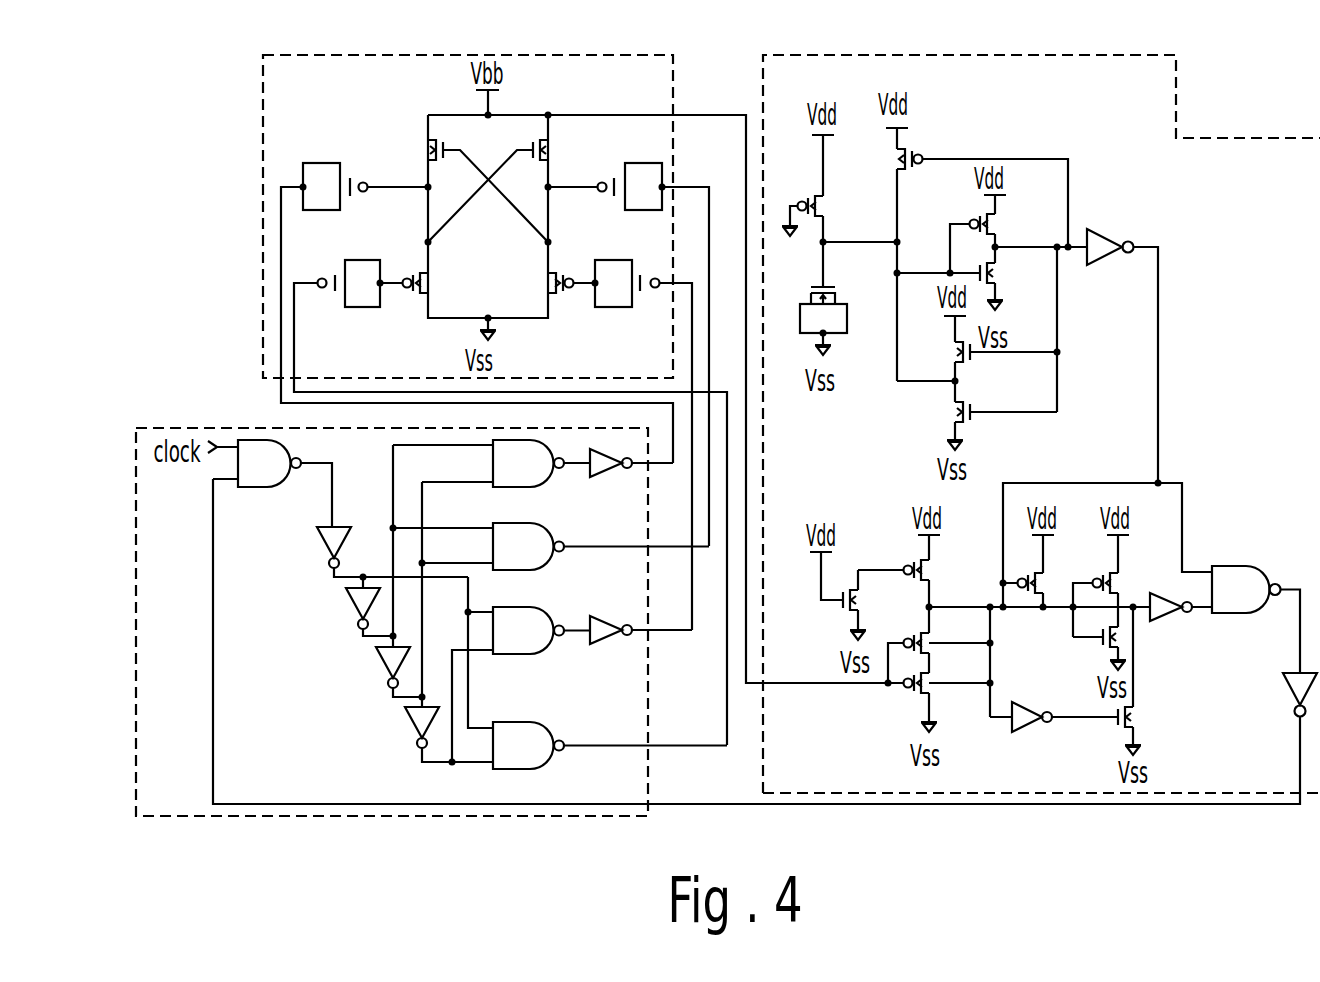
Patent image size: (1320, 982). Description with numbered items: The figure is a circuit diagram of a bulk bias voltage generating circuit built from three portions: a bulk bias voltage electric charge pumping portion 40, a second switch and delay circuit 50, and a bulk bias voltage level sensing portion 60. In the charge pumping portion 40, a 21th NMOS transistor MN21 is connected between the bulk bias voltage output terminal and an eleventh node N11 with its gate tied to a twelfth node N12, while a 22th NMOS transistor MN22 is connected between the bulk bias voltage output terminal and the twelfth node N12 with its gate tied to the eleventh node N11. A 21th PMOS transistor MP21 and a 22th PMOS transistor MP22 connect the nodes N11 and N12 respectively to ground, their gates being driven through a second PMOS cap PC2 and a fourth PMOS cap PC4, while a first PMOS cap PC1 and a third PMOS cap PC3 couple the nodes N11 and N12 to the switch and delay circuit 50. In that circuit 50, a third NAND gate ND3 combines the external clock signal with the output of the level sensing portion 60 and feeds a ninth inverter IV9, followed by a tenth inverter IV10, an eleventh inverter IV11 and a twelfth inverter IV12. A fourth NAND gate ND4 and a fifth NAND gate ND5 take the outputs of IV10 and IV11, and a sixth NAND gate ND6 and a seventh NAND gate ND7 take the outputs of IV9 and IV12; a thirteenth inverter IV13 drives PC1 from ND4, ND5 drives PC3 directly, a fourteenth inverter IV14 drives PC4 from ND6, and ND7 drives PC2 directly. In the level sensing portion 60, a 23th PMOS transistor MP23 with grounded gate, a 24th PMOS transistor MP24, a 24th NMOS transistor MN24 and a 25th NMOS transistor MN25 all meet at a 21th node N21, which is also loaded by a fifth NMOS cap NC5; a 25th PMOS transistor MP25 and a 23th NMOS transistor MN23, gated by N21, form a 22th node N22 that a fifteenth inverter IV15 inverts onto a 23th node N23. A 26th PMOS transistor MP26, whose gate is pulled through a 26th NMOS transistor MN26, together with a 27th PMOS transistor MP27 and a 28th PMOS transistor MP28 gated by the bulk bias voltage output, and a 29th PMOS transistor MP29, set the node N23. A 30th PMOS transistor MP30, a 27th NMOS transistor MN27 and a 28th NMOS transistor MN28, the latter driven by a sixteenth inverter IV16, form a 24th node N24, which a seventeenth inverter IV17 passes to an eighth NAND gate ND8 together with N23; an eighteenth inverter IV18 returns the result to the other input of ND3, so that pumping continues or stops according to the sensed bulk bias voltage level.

The bulk bias voltage (Vbb) electric charge pumping portion 40 is at (263, 215).
The second switch and delay circuit 50 is at (182, 428).
The bulk bias voltage (Vbb) level sensing portion 60 is at (1176, 78).
The 21th NMOS transistor MN21 is at (461, 187).
The 22th NMOS transistor MN22 is at (515, 187).
The 21th PMOS transistor MP21 is at (430, 283).
The 22th PMOS transistor MP22 is at (544, 283).
The first PMOS cap PC1 is at (477, 313).
The second PMOS cap PC2 is at (510, 502).
The third PMOS cap PC3 is at (628, 354).
The fourth PMOS cap PC4 is at (642, 445).
The eleventh node N11 is at (431, 243).
The twelfth node N12 is at (550, 189).
The third NAND gate ND3 is at (756, 622).
The fourth NAND gate ND4 is at (491, 481).
The fifth NAND gate ND5 is at (551, 565).
The sixth NAND gate ND6 is at (521, 669).
The seventh NAND gate ND7 is at (610, 763).
The eighth NAND gate ND8 is at (1255, 619).
The ninth inverter IV9 is at (374, 554).
The tenth inverter IV10 is at (350, 608).
The eleventh inverter IV11 is at (378, 573).
The twelfth inverter IV12 is at (428, 624).
The thirteenth inverter IV13 is at (631, 483).
The fourteenth inverter IV14 is at (640, 650).
The fifteenth inverter IV15 is at (1122, 356).
The sixteenth inverter IV16 is at (1054, 737).
The seventeenth inverter IV17 is at (1179, 626).
The eighteenth inverter IV18 is at (1277, 695).
The 23th PMOS transistor MP23 is at (830, 185).
The 24th PMOS transistor MP24 is at (955, 254).
The 25th PMOS transistor MP25 is at (973, 236).
The 26th PMOS transistor MP26 is at (919, 584).
The 27th PMOS transistor MP27 is at (941, 659).
The 28th PMOS transistor MP28 is at (939, 702).
The 29th PMOS transistor MP29 is at (1049, 571).
The 30th PMOS transistor MP30 is at (1121, 586).
The 23th NMOS transistor MN23 is at (974, 283).
The 24th NMOS transistor MN24 is at (979, 359).
The 25th NMOS transistor MN25 is at (978, 422).
The 26th NMOS transistor MN26 is at (865, 596).
The 27th NMOS transistor MN27 is at (1084, 651).
The 28th NMOS transistor MN28 is at (1152, 681).
The fifth NMOS cap NC5 is at (844, 321).
The 21th node N21 is at (825, 244).
The 22th node N22 is at (1068, 246).
The 23th node N23 is at (991, 609).
The 24th node N24 is at (1135, 607).